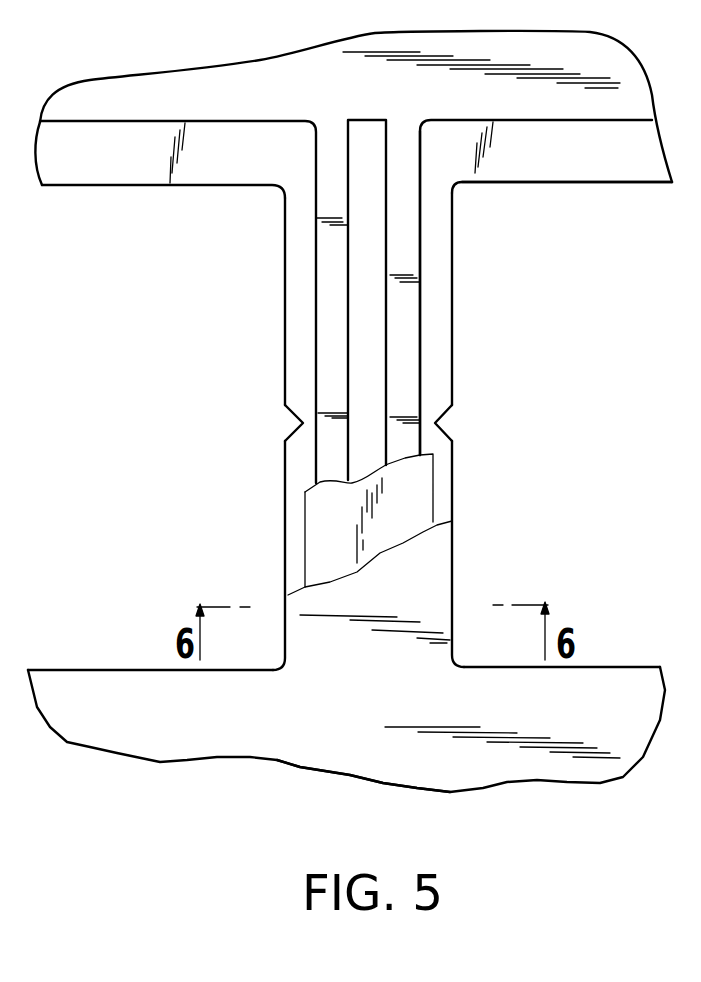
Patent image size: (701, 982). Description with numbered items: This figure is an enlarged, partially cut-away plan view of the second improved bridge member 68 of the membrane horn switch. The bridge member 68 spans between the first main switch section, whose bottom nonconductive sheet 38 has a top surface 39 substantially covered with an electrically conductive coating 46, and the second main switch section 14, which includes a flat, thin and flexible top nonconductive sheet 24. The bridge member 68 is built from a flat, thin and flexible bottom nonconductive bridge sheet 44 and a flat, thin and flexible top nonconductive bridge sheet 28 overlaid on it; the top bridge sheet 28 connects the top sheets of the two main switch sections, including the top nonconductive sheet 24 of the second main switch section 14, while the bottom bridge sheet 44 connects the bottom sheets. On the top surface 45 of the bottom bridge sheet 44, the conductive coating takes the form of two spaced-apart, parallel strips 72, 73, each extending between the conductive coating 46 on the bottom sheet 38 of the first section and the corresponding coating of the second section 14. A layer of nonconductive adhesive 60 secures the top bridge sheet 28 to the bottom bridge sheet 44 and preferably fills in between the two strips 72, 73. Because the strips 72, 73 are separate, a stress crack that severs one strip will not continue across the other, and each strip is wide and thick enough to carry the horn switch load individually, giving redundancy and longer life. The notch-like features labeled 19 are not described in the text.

The second main switch section 14 is at (617, 664).
The notches 19 is at (288, 423).
The top nonconductive sheet 24 is at (325, 755).
The top nonconductive bridge sheet 28 is at (455, 567).
The bottom nonconductive sheet 38 is at (620, 185).
The top surface 39 is at (540, 172).
The bottom nonconductive bridge sheet 44 is at (455, 303).
The top surface 45 is at (437, 263).
The electrically conductive coating 46 is at (605, 122).
The layer of adhesive 60 is at (435, 501).
The second improved bridge member 68 is at (543, 401).
The strip 72 is at (316, 232).
The strip 73 is at (386, 325).